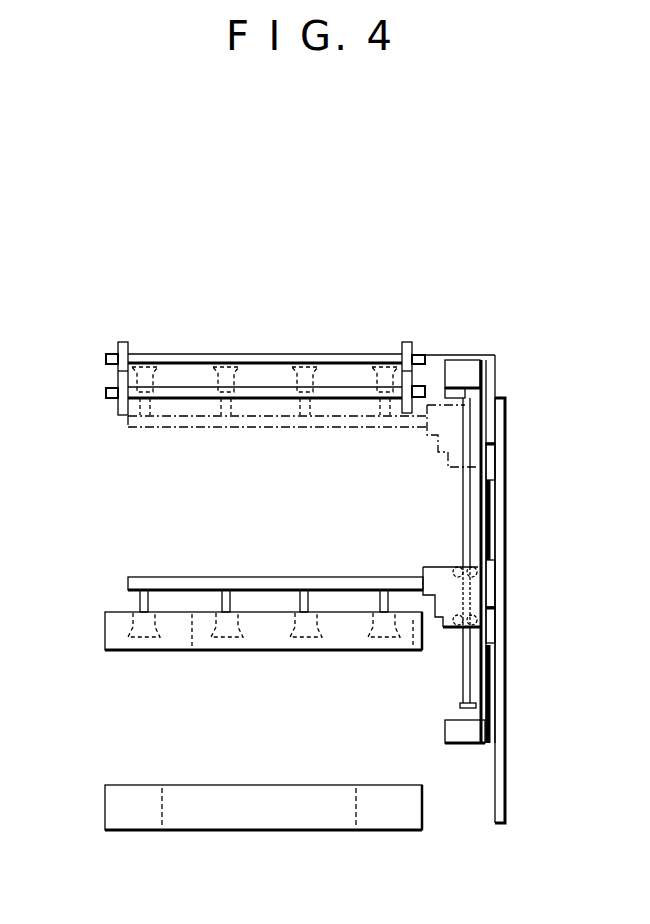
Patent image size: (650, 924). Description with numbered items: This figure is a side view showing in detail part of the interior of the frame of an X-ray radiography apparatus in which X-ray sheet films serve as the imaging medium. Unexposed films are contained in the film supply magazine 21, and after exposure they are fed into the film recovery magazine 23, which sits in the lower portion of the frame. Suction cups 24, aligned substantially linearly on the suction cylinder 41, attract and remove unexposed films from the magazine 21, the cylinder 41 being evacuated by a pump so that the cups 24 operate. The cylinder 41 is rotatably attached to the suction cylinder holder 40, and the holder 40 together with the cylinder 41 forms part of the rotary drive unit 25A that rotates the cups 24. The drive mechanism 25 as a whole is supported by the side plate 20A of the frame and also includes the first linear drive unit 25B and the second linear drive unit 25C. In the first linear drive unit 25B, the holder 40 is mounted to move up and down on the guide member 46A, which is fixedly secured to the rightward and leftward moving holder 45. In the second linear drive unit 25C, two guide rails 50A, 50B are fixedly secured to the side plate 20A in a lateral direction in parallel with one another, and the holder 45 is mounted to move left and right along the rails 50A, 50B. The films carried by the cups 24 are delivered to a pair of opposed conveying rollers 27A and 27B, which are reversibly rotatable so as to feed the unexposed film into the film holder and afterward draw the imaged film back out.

The side plate 20A is at (507, 812).
The film supply magazine 21 is at (105, 632).
The film recovery magazine 23 is at (230, 830).
The suction cups 24 is at (140, 600).
The drive mechanism 25 is at (527, 605).
The rotary drive unit 25A is at (450, 553).
The first linear drive unit 25B is at (494, 583).
The second linear drive unit 25C is at (493, 660).
The conveying roller 27A is at (118, 342).
The conveying roller 27B is at (122, 417).
The suction cylinder holder 40 is at (430, 567).
The suction cylinder 41 is at (232, 582).
The rightward and leftward moving holder 45 is at (487, 738).
The upward and downward moving guide member 46A is at (472, 693).
The guide rail 50A is at (490, 460).
The guide rail 50B is at (492, 628).